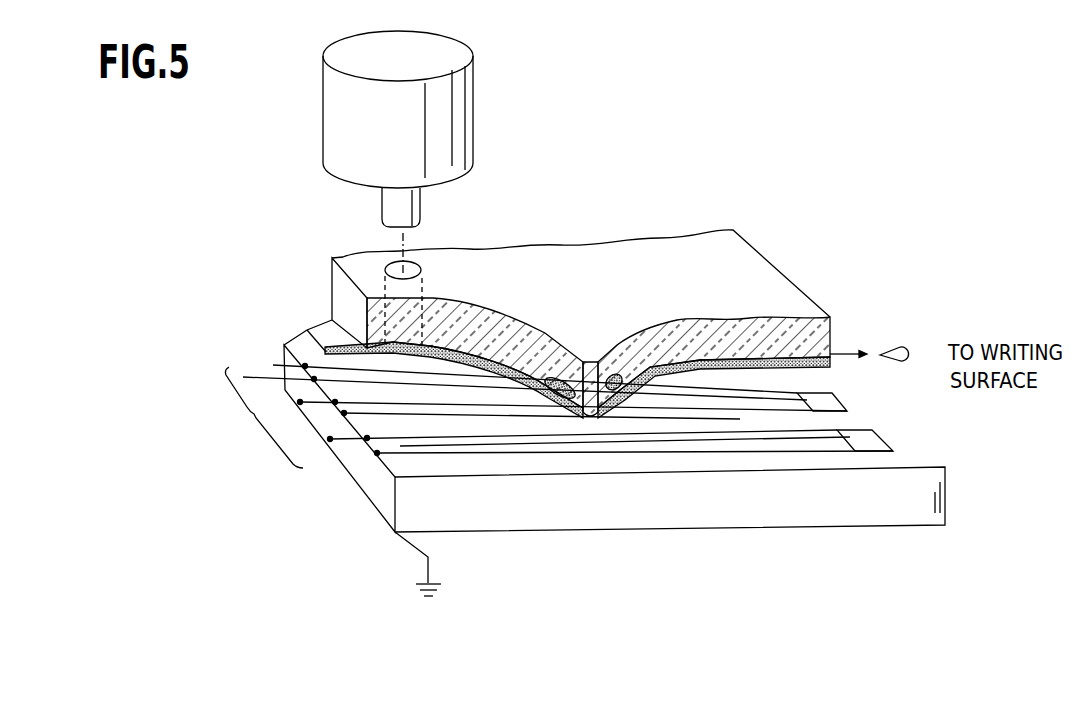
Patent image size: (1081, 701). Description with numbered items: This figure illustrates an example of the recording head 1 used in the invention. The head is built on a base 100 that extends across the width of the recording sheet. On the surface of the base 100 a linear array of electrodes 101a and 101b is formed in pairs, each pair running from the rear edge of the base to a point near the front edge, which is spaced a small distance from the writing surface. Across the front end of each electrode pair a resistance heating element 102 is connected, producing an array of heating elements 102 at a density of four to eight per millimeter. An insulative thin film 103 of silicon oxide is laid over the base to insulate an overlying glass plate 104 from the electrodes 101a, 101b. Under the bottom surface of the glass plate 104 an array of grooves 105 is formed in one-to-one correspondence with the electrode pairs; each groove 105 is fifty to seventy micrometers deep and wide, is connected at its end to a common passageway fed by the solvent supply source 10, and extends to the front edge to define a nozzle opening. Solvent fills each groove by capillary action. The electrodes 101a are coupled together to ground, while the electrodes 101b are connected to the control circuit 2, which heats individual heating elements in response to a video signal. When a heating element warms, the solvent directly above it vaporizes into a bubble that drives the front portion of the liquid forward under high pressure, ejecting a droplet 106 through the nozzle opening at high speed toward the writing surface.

The recording head 1 is at (594, 218).
The control circuit 2 is at (187, 417).
The solvent supply source 10 is at (473, 83).
The base 100 is at (505, 524).
The electrodes 101a is at (827, 433).
The electrodes 101b is at (837, 447).
The resistance heating element 102 is at (825, 400).
The insulative thin film 103 is at (313, 325).
The glass plate 104 is at (343, 257).
The groove 105 is at (547, 378).
The droplet 106 is at (898, 346).